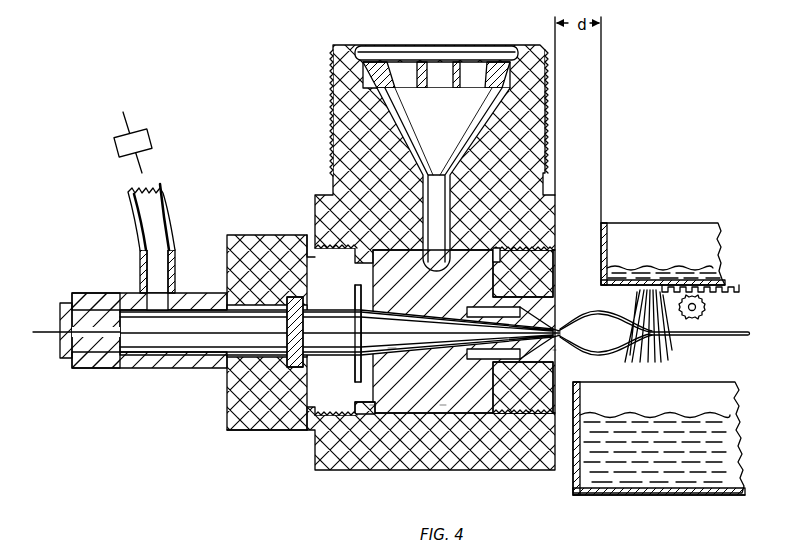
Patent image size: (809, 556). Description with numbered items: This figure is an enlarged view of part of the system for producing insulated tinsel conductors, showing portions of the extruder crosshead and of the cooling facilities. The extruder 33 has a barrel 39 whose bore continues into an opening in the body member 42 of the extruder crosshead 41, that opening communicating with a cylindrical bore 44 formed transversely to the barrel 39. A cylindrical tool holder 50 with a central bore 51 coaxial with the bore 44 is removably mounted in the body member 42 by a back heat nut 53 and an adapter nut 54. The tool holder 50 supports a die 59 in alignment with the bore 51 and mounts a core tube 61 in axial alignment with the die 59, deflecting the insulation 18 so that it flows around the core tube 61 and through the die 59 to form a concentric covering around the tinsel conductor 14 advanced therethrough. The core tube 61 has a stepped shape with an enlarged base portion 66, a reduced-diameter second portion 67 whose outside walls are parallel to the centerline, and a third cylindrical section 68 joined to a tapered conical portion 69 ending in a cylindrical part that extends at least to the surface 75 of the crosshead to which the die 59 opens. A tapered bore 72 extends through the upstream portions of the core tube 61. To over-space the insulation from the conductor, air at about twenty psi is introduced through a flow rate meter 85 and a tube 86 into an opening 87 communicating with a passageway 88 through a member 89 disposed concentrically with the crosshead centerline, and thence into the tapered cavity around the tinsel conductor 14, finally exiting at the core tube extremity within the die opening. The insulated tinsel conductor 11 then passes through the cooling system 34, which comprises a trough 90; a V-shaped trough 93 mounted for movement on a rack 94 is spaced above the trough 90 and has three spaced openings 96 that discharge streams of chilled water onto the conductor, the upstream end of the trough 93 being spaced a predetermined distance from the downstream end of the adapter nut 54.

The tinsel conductor (insulated) 11 is at (725, 337).
The tinsel conductor 14 is at (44, 332).
The insulation 18 is at (595, 318).
The extruder 33 is at (354, 283).
The cooling system 34 is at (662, 512).
The barrel 39 is at (338, 108).
The extruder crosshead 41 is at (231, 434).
The body member 42 is at (327, 466).
The cylindrical bore 44 is at (460, 413).
The tool holder 50 is at (392, 352).
The central bore 51 is at (443, 410).
The back heat nut 53 is at (227, 420).
The adapter nut 54 is at (528, 407).
The die 59 is at (555, 353).
The core tube 61 is at (484, 358).
The enlarged base portion 66 is at (352, 373).
The second portion 67 is at (420, 310).
The third cylindrical section 68 is at (490, 318).
The tapered conical portion 69 is at (525, 330).
The tapered bore 72 is at (372, 410).
The surface 75 is at (557, 327).
The flow rate meter 85 is at (149, 137).
The tube 86 is at (176, 218).
The opening 87 is at (150, 292).
The passageway 88 is at (167, 355).
The member 89 is at (110, 368).
The trough 90 is at (602, 495).
The V-shaped trough 93 is at (687, 230).
The rack 94 is at (722, 292).
The openings 96 is at (645, 280).